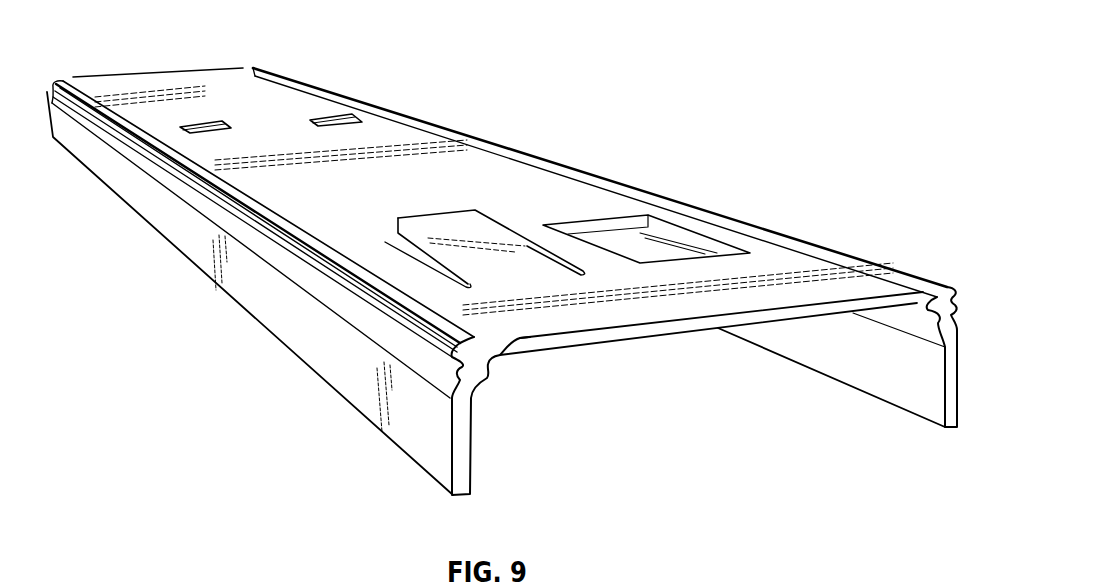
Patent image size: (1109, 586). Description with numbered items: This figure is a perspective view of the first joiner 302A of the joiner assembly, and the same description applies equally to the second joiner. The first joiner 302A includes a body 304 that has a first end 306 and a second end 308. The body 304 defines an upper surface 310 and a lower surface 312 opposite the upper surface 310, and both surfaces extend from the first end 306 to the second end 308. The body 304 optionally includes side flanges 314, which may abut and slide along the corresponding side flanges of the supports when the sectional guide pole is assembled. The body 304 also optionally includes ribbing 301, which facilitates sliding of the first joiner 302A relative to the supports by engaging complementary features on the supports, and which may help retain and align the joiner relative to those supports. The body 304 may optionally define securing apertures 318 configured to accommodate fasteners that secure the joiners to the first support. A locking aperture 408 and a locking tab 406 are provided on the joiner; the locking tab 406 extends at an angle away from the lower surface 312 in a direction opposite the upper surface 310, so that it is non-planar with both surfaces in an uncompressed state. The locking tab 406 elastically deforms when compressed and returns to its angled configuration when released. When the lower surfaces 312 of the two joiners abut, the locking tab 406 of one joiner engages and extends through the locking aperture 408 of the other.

The first joiner 302A is at (781, 33).
The ribbing 301 is at (425, 328).
The body 304 is at (443, 150).
The first end 306 is at (47, 92).
The second end 308 is at (673, 327).
The upper surface 310 is at (558, 347).
The lower surface 312 is at (548, 192).
The side flanges 314 is at (425, 437).
The securing apertures 318 is at (200, 122).
The locking tab 406 is at (440, 233).
The locking aperture 408 is at (703, 240).